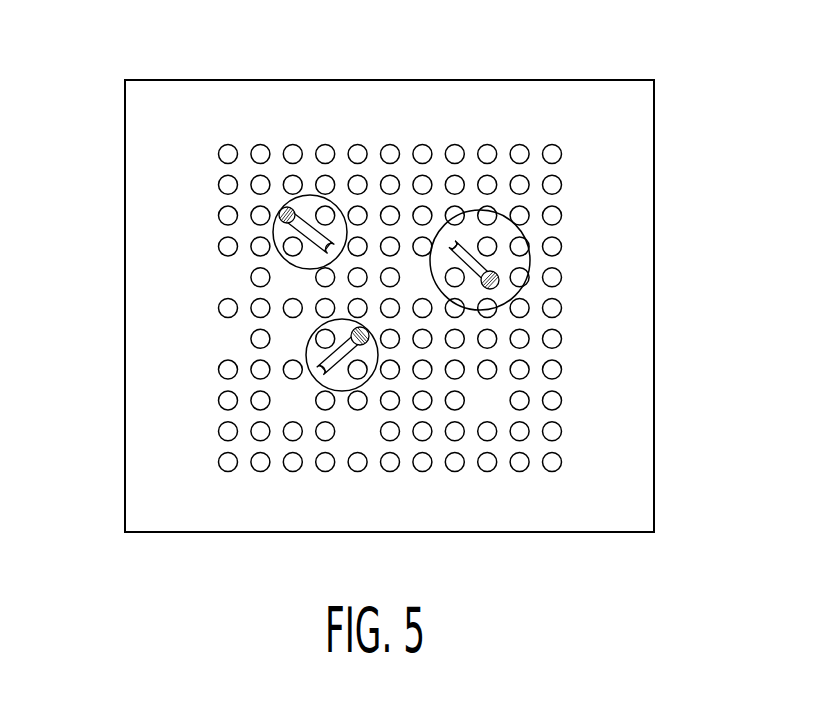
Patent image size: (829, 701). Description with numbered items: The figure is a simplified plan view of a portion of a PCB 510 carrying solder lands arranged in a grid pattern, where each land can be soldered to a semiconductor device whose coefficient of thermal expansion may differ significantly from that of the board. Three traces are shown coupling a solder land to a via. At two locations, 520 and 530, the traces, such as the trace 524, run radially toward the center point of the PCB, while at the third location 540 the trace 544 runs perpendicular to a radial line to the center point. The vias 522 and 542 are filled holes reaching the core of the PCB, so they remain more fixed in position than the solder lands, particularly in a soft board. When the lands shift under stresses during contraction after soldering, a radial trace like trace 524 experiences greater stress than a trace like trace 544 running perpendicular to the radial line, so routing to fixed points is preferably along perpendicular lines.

The substrate / test structure 510 is at (187, 123).
The radial trace region 520 is at (300, 268).
The via 522 is at (274, 231).
The radial trace 524 is at (306, 207).
The radial trace region 530 is at (306, 353).
The perpendicular trace region 540 is at (524, 236).
The via 542 is at (499, 273).
The perpendicular trace 544 is at (458, 240).